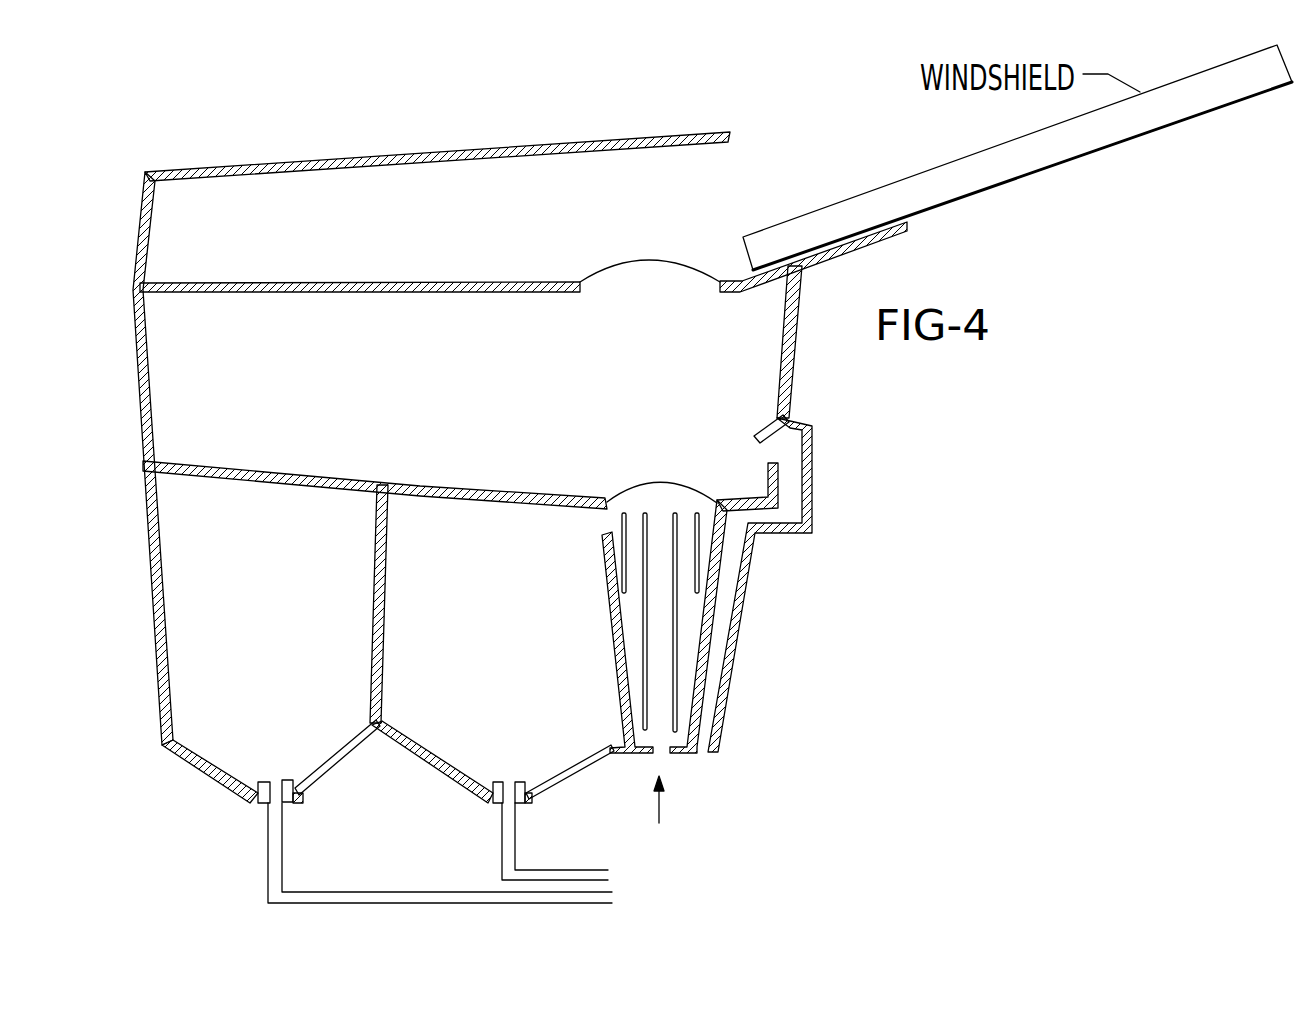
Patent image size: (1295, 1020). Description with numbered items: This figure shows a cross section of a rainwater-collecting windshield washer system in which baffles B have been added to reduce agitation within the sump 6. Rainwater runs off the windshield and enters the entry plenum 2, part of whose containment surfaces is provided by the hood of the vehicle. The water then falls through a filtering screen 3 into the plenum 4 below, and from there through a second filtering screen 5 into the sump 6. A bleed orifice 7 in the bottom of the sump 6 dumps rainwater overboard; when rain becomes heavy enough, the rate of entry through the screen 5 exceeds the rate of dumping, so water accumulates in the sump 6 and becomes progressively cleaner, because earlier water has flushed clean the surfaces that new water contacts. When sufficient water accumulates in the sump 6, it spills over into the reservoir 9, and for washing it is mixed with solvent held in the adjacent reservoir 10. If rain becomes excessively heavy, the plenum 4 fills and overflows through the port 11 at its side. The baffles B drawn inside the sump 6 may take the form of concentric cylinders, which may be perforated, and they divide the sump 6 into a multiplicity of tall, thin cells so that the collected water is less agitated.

The entry plenum 2 is at (395, 246).
The filtering screen 3 is at (653, 265).
The plenum 4 is at (460, 406).
The filtering screen 5 is at (628, 484).
The sump 6 is at (664, 626).
The bleed orifice 7 is at (665, 822).
The reservoir 9 is at (513, 644).
The reservoir 10 is at (288, 660).
The port 11 is at (745, 458).
The baffles B is at (627, 578).